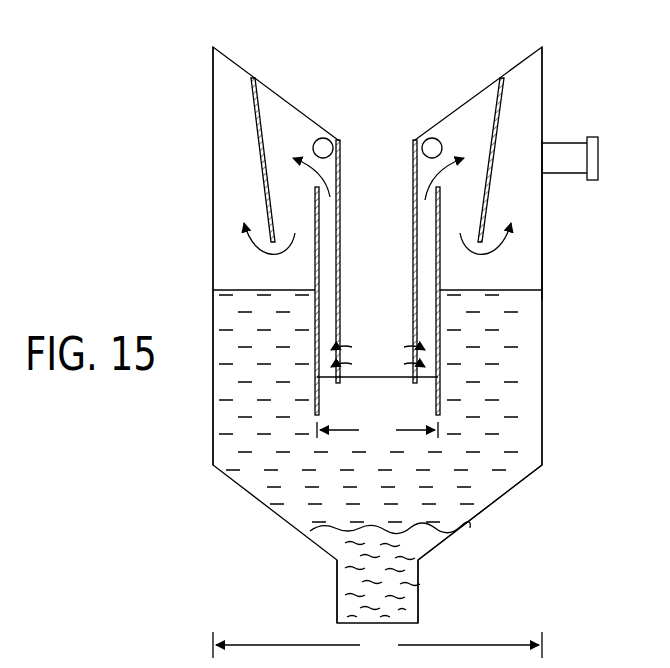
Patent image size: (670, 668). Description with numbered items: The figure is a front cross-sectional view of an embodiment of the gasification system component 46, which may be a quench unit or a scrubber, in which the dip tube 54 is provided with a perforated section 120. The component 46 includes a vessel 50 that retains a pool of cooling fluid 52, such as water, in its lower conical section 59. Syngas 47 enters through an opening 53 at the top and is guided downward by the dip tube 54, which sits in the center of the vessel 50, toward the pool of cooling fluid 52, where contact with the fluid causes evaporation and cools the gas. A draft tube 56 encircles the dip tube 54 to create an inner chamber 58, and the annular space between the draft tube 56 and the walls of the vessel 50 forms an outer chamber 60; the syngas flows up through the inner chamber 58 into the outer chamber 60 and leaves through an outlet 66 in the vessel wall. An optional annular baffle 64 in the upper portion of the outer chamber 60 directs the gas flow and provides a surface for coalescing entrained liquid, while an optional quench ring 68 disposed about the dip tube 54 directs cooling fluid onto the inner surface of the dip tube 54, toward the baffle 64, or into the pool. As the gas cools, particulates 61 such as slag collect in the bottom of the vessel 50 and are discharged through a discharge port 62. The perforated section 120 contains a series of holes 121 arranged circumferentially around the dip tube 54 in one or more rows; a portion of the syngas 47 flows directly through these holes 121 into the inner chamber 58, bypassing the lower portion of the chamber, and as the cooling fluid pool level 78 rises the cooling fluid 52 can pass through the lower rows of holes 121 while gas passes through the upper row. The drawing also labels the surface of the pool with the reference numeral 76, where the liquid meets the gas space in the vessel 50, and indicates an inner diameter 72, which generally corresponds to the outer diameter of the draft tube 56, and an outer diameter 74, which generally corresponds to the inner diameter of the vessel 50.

The gasification system component 46 is at (570, 27).
The syngas 47 is at (383, 159).
The vessel 50 is at (543, 230).
The cooling fluid 52 is at (213, 449).
The opening 53 is at (361, 139).
The dip tube 54 is at (341, 270).
The draft tube 56 is at (315, 262).
The inner chamber 58 is at (413, 244).
The conical section 59 is at (487, 506).
The outer chamber 60 is at (528, 265).
The particulates 61 is at (339, 585).
The discharge port 62 is at (419, 587).
The baffle 64 is at (499, 128).
The outlet 66 is at (592, 137).
The quench ring 68 is at (440, 137).
The inner diameter 72 is at (377, 430).
The outer diameter 74 is at (377, 645).
The liquid level 76 is at (213, 284).
The cooling fluid pool level 78 is at (388, 377).
The perforated section 120 is at (340, 382).
The holes 121 is at (332, 367).